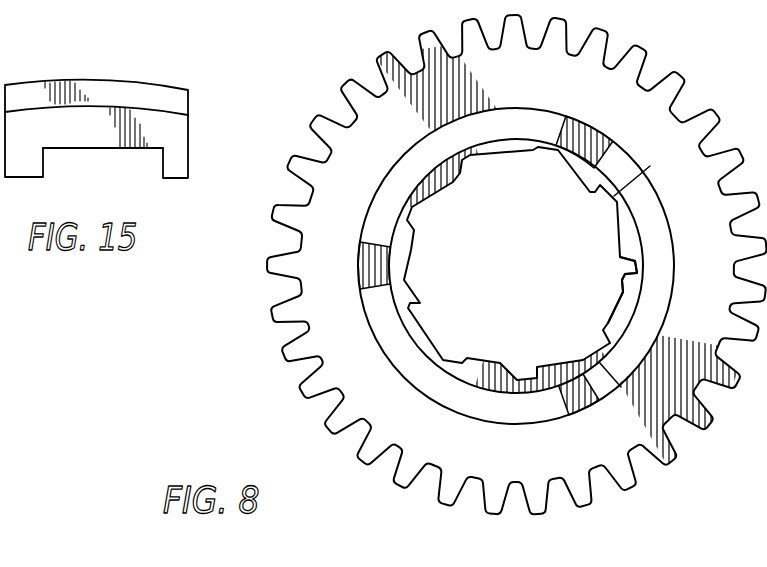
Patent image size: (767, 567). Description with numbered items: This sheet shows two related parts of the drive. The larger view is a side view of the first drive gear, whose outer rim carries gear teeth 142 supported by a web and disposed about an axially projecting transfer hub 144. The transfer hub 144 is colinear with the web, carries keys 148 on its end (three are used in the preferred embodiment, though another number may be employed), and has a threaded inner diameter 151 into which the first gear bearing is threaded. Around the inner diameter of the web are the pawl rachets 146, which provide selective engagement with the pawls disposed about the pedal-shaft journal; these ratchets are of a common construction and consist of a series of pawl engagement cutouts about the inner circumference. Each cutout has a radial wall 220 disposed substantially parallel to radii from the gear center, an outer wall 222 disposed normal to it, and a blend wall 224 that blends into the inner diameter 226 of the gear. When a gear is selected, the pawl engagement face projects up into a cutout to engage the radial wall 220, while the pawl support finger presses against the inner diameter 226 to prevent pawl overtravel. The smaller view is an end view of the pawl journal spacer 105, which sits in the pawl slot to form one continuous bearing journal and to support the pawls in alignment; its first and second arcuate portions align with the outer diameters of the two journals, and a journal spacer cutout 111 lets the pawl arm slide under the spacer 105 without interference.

In FIG. 15, the pawl journal spacer 105 is at (150, 78).
In FIG. 15, the journal spacer cutout 111 is at (70, 150).
In FIG. 8, the gear teeth 142 is at (282, 346).
In FIG. 8, the transfer hub 144 is at (679, 268).
In FIG. 8, the pawl rachets 146 is at (643, 272).
In FIG. 8, the keys 148 is at (592, 138).
In FIG. 8, the threaded inner diameter 151 is at (508, 142).
In FIG. 8, the radial wall 220 is at (630, 260).
In FIG. 8, the outer wall 222 is at (637, 273).
In FIG. 8, the blend wall 224 is at (620, 297).
In FIG. 8, the inner diameter 226 is at (608, 316).